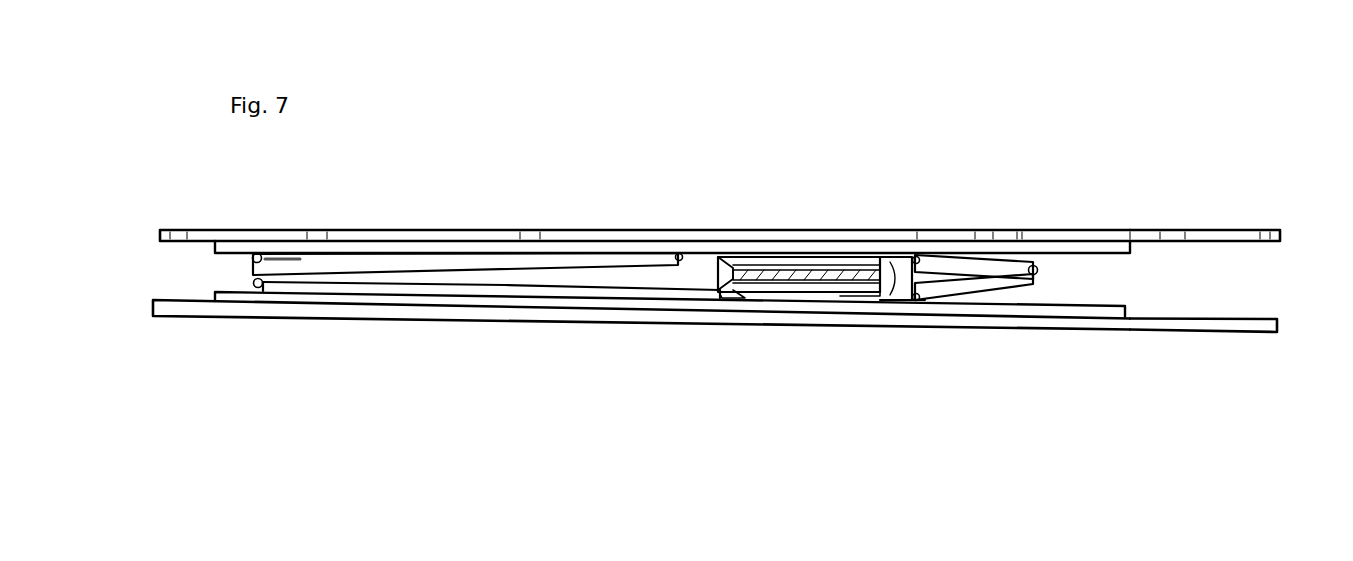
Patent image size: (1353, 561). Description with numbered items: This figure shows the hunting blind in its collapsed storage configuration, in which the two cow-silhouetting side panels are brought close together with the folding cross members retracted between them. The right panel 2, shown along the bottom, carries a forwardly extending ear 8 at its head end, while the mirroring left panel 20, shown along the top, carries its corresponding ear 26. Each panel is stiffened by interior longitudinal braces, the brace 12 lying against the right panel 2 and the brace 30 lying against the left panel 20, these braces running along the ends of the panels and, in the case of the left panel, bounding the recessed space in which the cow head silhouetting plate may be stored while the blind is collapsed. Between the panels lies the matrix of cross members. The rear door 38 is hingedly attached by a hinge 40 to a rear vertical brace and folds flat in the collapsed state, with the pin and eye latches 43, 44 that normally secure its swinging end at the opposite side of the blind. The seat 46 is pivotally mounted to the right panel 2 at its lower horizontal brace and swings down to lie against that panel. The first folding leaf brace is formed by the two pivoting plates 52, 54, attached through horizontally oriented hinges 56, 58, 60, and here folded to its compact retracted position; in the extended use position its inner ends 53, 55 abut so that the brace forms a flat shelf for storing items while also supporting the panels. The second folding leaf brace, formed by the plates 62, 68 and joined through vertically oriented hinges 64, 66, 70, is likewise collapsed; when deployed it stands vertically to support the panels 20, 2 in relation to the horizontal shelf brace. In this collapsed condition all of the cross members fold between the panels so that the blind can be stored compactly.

The right panel 2 is at (688, 322).
The ear 8 is at (1240, 324).
The brace 12 is at (593, 303).
The left panel 20 is at (609, 237).
The ear 26 is at (1240, 232).
The brace 30 is at (523, 250).
The rear door 38 is at (400, 262).
The hinge 40 is at (253, 258).
The pin and eye latch 43 is at (254, 283).
The pin and eye latch 44 is at (677, 262).
The seat 46 is at (495, 288).
The pivoting plate 52 is at (782, 258).
The inner end 53 is at (856, 262).
The pivoting plate 54 is at (853, 292).
The inner end 55 is at (790, 290).
The hinge 56 is at (755, 284).
The hinge 58 is at (755, 257).
The hinge 60 is at (722, 298).
The folding leaf brace plate 62 is at (975, 258).
The hinge 64 is at (1037, 268).
The hinge 66 is at (906, 262).
The folding leaf brace plate 68 is at (1000, 284).
The hinge 70 is at (905, 305).